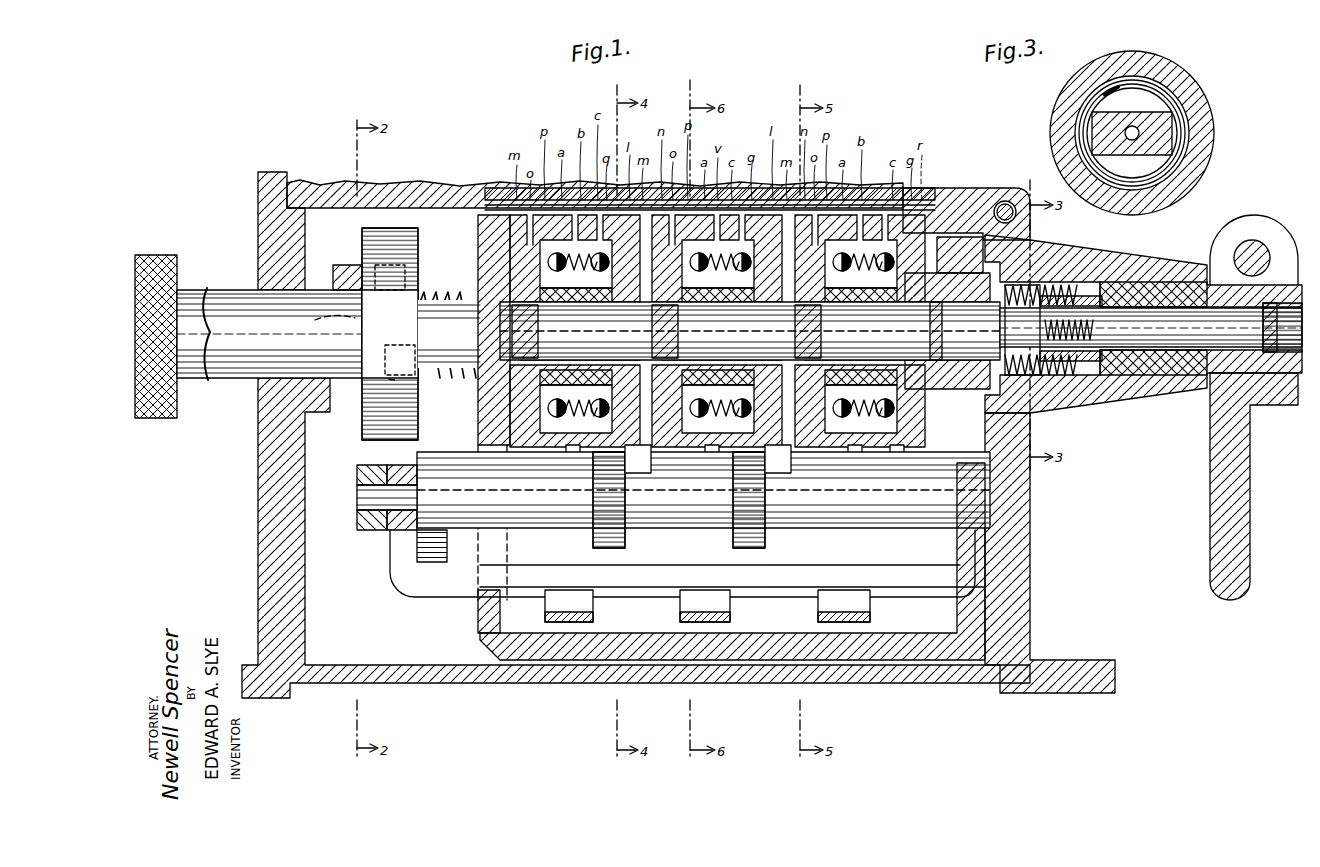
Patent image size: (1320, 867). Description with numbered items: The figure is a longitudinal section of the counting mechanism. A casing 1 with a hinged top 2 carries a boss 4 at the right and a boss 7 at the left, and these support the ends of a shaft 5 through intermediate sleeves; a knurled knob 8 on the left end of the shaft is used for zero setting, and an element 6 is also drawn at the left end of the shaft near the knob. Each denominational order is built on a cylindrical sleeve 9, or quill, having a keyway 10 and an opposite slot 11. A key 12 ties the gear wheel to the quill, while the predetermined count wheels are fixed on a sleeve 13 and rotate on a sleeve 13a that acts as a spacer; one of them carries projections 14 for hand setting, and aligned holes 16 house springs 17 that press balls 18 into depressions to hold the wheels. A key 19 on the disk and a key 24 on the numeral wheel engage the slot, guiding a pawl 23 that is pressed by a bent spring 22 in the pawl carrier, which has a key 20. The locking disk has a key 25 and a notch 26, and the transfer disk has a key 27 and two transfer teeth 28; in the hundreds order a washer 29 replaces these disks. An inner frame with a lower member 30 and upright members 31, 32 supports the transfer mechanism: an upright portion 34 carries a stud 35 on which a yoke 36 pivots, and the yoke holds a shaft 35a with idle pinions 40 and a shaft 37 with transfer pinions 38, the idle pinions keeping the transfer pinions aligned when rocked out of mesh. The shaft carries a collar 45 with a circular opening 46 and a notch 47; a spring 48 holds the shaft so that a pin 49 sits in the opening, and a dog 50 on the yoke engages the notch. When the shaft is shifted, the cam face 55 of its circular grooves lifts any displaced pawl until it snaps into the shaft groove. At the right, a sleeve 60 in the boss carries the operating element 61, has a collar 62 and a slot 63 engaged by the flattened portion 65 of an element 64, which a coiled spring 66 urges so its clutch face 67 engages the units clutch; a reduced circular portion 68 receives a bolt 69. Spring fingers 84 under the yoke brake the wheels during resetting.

In FIG. 1, the casing 1 is at (258, 512).
In FIG. 1, the hinged top 2 is at (970, 190).
In FIG. 1, the boss 4 is at (1140, 266).
In FIG. 3, the boss 4 is at (1165, 95).
In FIG. 1, the shaft 5 is at (940, 330).
In FIG. 1, the drive shaft 6 is at (236, 294).
In FIG. 1, the boss 7 is at (340, 412).
In FIG. 1, the knurled knob 8 is at (160, 248).
In FIG. 1, the cylindrical sleeve 9 is at (721, 335).
In FIG. 1, the keyway 10 is at (724, 335).
In FIG. 1, the slot 11 is at (691, 323).
In FIG. 1, the key 12 is at (808, 337).
In FIG. 1, the sleeve 13 is at (570, 372).
In FIG. 1, the sleeve 13a is at (545, 540).
In FIG. 1, the projections 14 is at (712, 470).
In FIG. 1, the holes 16 is at (876, 200).
In FIG. 1, the springs 17 is at (855, 200).
In FIG. 1, the balls 18 is at (486, 256).
In FIG. 1, the key 19 is at (722, 331).
In FIG. 1, the key 20 is at (653, 373).
In FIG. 1, the bent spring 22 is at (486, 276).
In FIG. 1, the pawl 23 is at (750, 331).
In FIG. 1, the key 24 is at (484, 300).
In FIG. 1, the key 25 is at (752, 345).
In FIG. 1, the notch 26 is at (648, 473).
In FIG. 1, the key 27 is at (608, 337).
In FIG. 1, the transfer teeth 28 is at (640, 473).
In FIG. 1, the washer 29 is at (500, 198).
In FIG. 1, the lower member 30 is at (665, 650).
In FIG. 1, the upright member 31 is at (985, 585).
In FIG. 1, the upright member 32 is at (478, 238).
In FIG. 1, the upright portion 34 is at (357, 472).
In FIG. 1, the stud 35 is at (366, 503).
In FIG. 1, the shaft 35a is at (455, 532).
In FIG. 1, the yoke 36 is at (410, 585).
In FIG. 1, the shaft 37 is at (445, 438).
In FIG. 1, the transfer pinions 38 is at (665, 462).
In FIG. 1, the pinions 40 is at (593, 545).
In FIG. 1, the collar 45 is at (398, 235).
In FIG. 1, the circular opening 46 is at (390, 321).
In FIG. 1, the notch 47 is at (318, 320).
In FIG. 1, the spring 48 is at (448, 376).
In FIG. 1, the pin 49 is at (342, 268).
In FIG. 1, the dog 50 is at (362, 330).
In FIG. 1, the cam face 55 is at (500, 330).
In FIG. 1, the sleeve 60 is at (1165, 380).
In FIG. 1, the operating element 61 is at (1280, 230).
In FIG. 1, the collar 62 is at (1118, 380).
In FIG. 1, the slot 63 is at (1075, 380).
In FIG. 3, the slot 63 is at (1182, 103).
In FIG. 1, the element 64 is at (940, 278).
In FIG. 1, the flattened portion 65 is at (1030, 285).
In FIG. 3, the flattened portion 65 is at (1162, 150).
In FIG. 1, the coiled spring 66 is at (1072, 285).
In FIG. 3, the coiled spring 66 is at (1118, 85).
In FIG. 1, the clutch face 67 is at (935, 232).
In FIG. 1, the reduced circular portion 68 is at (1085, 380).
In FIG. 1, the bolt 69 is at (1190, 380).
In FIG. 1, the spring fingers 84 is at (680, 610).